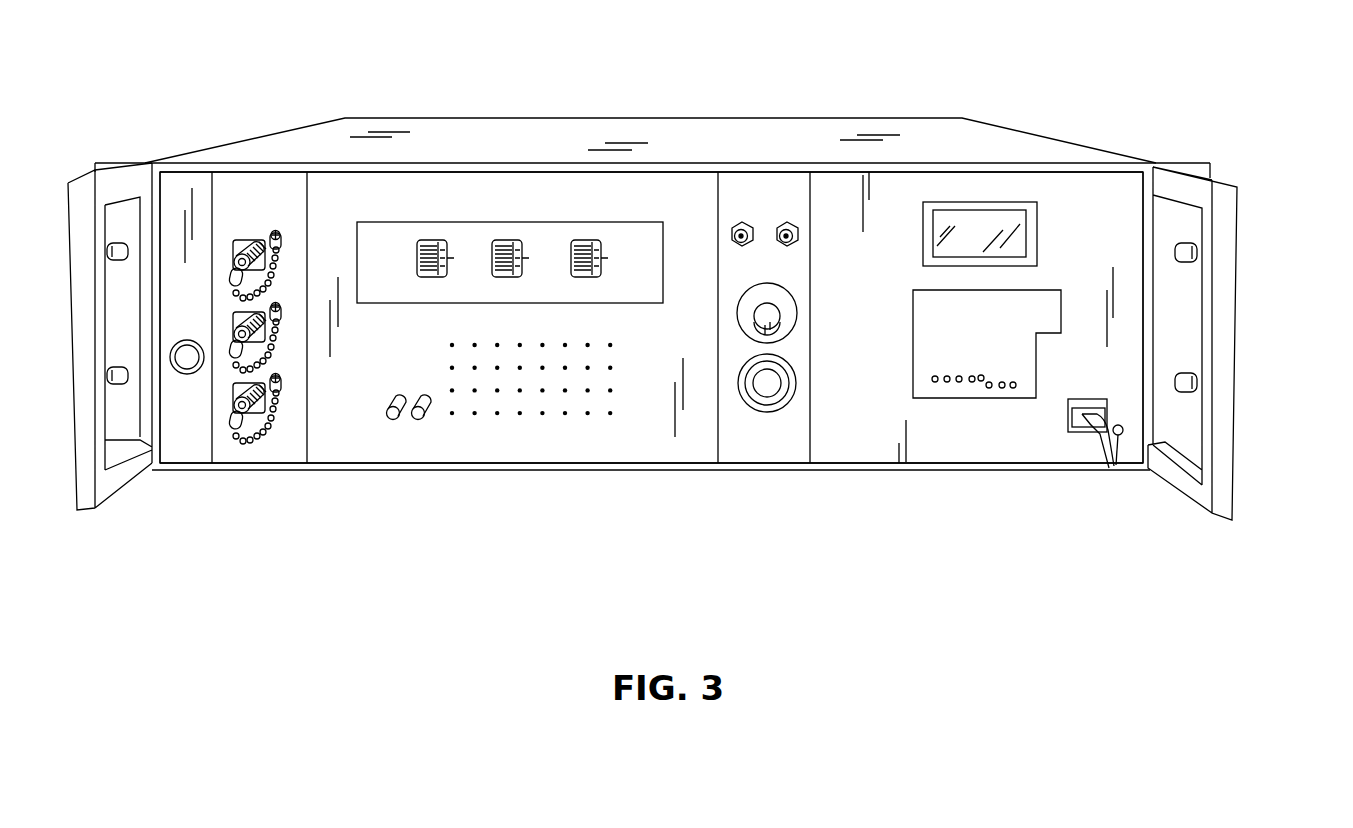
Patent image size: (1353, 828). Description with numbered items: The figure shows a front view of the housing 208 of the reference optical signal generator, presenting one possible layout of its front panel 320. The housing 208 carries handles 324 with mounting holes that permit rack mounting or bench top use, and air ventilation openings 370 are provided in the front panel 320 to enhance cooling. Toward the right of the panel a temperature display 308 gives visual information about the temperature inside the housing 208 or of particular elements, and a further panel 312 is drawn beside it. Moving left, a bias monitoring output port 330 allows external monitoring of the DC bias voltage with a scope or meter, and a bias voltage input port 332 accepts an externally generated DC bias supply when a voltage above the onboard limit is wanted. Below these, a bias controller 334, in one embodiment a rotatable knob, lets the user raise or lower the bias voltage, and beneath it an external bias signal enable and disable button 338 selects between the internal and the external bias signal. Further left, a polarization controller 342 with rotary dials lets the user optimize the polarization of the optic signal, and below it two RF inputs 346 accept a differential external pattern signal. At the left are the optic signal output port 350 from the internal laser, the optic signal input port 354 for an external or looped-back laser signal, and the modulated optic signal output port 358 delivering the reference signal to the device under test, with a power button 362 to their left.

The housing 208 is at (428, 140).
The temperature display 308 is at (968, 215).
The indicator panel 312 is at (966, 392).
The front panel 320 is at (1095, 222).
The handles 324 is at (1220, 383).
The bias monitoring output port 330 is at (787, 222).
The bias voltage input port 332 is at (742, 222).
The bias controller 334 is at (785, 335).
The external bias signal enable and disable button 338 is at (767, 412).
The polarization controller 342 is at (586, 240).
The RF inputs 346 is at (393, 420).
The optic signal output port 350 is at (238, 237).
The optic signal input port 354 is at (266, 288).
The modulated optic signal output port 358 is at (253, 400).
The power button 362 is at (187, 370).
The air ventilation openings 370 is at (520, 415).